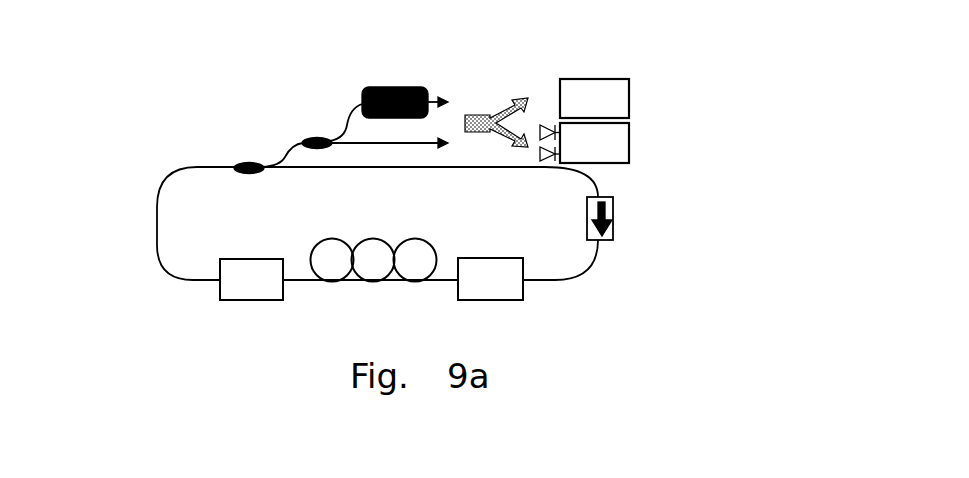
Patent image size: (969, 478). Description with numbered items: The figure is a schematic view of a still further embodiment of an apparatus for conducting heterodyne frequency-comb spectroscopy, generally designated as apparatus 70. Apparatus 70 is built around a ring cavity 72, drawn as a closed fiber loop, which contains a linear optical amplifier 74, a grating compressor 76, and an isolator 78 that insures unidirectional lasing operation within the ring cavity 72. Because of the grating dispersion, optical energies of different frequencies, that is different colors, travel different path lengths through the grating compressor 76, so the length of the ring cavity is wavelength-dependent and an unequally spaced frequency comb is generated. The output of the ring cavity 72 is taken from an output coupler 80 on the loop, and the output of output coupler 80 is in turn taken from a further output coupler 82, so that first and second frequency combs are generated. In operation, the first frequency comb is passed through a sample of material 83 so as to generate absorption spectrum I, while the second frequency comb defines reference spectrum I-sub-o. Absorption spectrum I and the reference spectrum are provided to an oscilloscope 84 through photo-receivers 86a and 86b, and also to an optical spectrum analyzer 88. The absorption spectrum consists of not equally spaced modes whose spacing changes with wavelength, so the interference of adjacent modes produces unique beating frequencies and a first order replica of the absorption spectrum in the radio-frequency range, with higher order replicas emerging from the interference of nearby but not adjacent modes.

The apparatus for conducting heterodyne frequency-comb spectroscopy 70 is at (148, 291).
The ring cavity 72 is at (395, 282).
The linear optical amplifier 74 is at (527, 301).
The grating compressor 76 is at (227, 301).
The isolator 78 is at (615, 215).
The output coupler 80 is at (232, 162).
The output coupler 82 is at (297, 137).
The sample of material 83 is at (392, 88).
The oscilloscope 84 is at (630, 143).
The photo-receiver 86a is at (541, 125).
The photo-receiver 86b is at (537, 160).
The optical spectrum analyzer 88 is at (630, 95).